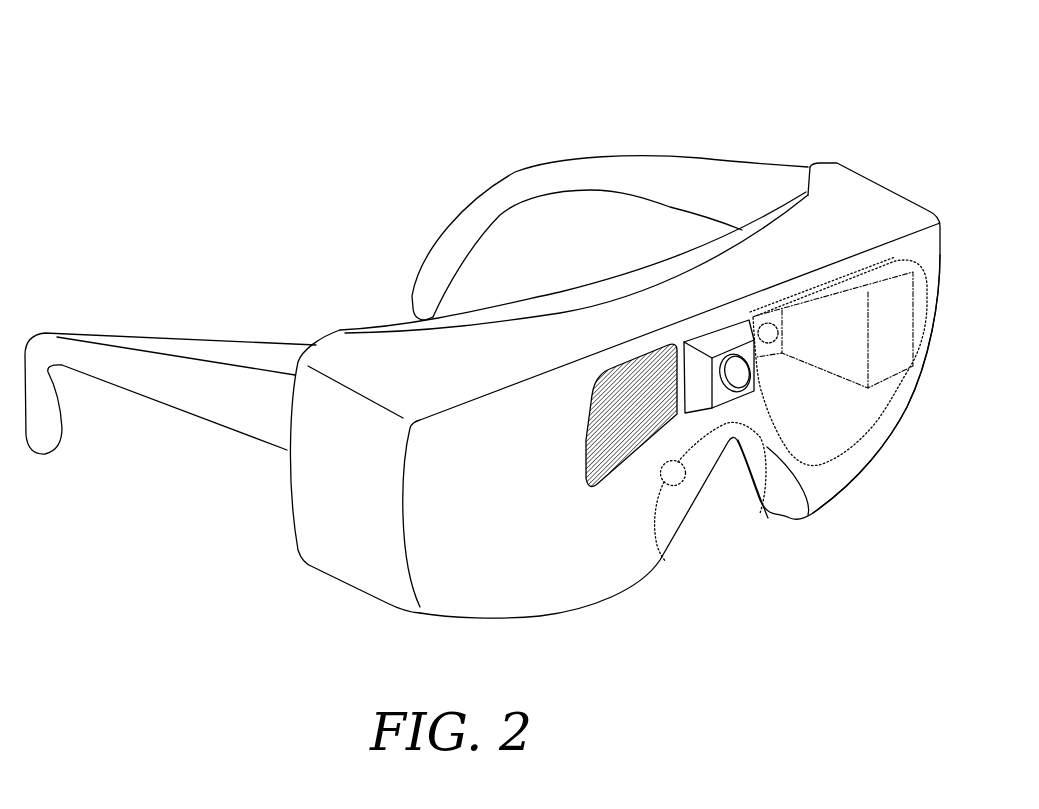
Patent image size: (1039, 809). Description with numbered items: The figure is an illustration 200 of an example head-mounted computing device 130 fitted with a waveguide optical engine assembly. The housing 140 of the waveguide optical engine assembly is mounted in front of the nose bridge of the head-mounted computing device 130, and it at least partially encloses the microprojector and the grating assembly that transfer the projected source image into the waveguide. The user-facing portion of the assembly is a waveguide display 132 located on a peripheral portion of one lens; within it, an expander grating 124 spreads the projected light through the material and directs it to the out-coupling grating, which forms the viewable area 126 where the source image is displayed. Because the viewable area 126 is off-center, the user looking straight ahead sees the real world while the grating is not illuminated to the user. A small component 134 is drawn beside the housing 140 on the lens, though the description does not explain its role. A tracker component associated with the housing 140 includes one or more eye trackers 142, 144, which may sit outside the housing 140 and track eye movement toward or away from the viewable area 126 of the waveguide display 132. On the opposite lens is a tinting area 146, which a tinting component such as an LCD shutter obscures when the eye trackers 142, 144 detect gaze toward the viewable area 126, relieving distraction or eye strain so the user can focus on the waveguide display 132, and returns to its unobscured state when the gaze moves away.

The illustration 200 is at (112, 88).
The expander grating 124 is at (847, 297).
The viewable area 126 is at (893, 280).
The head-mounted computing device 130 is at (380, 602).
The waveguide display 132 is at (877, 427).
The sensor 134 is at (767, 322).
The housing 140 is at (693, 337).
The eye tracker 142 is at (661, 503).
The eye tracker 144 is at (808, 515).
The tinting area 146 is at (590, 487).